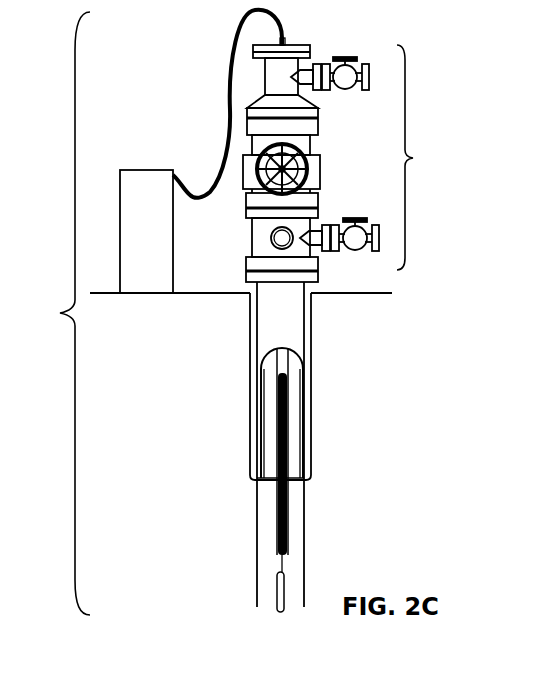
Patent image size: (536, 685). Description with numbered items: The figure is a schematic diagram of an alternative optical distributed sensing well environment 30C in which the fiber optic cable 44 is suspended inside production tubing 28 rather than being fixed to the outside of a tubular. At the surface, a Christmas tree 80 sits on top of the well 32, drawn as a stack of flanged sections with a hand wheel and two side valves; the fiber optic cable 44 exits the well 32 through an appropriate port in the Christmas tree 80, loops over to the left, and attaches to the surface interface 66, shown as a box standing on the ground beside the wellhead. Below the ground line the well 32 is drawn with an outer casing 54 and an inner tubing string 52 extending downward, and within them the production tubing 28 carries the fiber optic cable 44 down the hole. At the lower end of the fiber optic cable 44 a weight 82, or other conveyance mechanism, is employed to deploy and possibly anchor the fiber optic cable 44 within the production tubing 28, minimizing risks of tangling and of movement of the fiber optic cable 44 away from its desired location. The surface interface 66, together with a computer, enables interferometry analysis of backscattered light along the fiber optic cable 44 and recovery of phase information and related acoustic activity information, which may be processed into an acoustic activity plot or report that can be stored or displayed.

The optical distributed sensing well environment 30C is at (51, 313).
The fiber optic cable 44 is at (231, 96).
The surface interface 66 is at (119, 252).
The well 32 is at (234, 278).
The Christmas tree 80 is at (342, 154).
The tubing 52 is at (252, 330).
The casing 54 is at (307, 342).
The production tubing 28 is at (288, 525).
The weight 82 is at (277, 585).